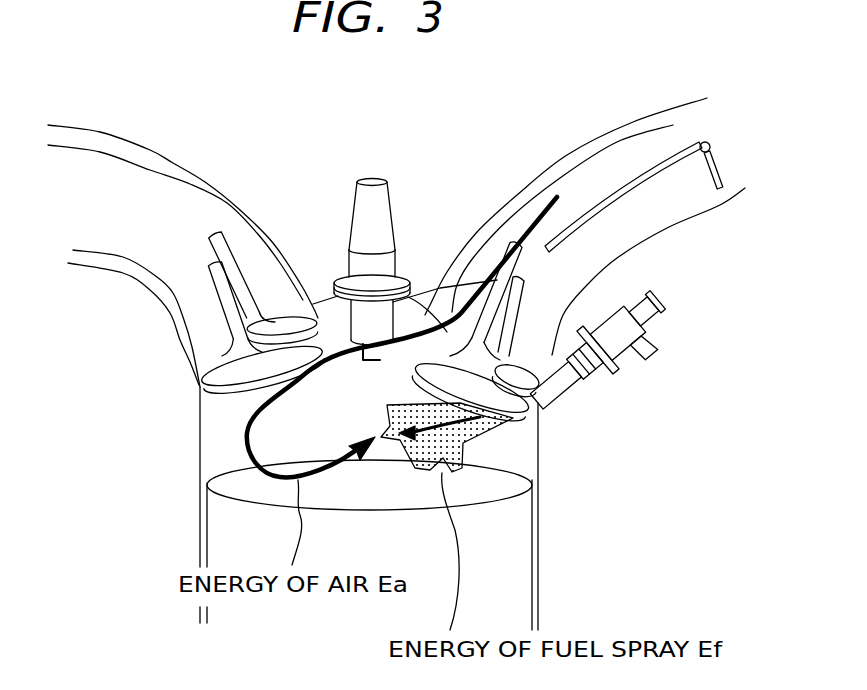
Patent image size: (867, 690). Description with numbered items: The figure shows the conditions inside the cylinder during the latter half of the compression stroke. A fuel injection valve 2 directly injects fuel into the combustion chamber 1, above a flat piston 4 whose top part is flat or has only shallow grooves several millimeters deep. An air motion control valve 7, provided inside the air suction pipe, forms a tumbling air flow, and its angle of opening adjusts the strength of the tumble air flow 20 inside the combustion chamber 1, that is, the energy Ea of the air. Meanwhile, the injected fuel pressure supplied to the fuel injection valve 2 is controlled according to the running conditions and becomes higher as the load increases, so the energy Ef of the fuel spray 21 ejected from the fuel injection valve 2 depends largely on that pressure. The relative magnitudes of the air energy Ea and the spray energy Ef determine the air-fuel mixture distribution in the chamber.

The combustion chamber 1 is at (300, 425).
The fuel injection valve 2 is at (583, 378).
The flat piston 4 is at (236, 487).
The air motion control valve 7 is at (627, 190).
The tumble air flow 20 is at (243, 447).
The fuel spray 21 is at (500, 428).